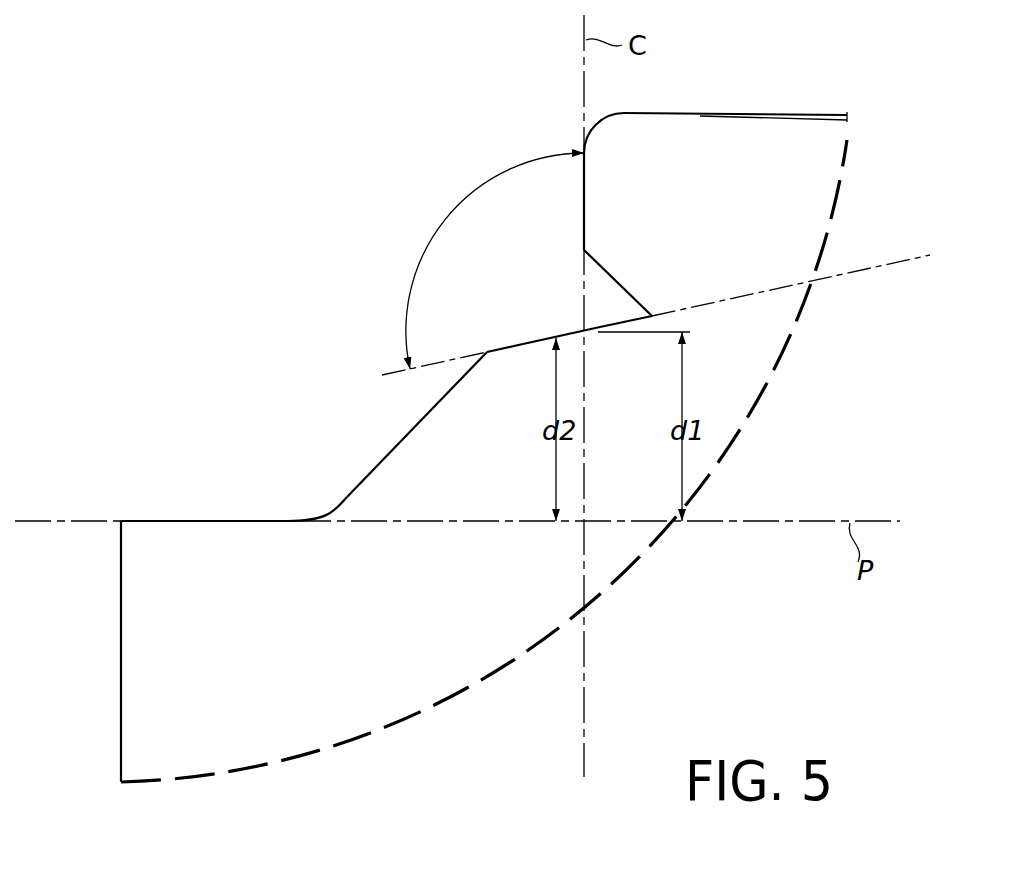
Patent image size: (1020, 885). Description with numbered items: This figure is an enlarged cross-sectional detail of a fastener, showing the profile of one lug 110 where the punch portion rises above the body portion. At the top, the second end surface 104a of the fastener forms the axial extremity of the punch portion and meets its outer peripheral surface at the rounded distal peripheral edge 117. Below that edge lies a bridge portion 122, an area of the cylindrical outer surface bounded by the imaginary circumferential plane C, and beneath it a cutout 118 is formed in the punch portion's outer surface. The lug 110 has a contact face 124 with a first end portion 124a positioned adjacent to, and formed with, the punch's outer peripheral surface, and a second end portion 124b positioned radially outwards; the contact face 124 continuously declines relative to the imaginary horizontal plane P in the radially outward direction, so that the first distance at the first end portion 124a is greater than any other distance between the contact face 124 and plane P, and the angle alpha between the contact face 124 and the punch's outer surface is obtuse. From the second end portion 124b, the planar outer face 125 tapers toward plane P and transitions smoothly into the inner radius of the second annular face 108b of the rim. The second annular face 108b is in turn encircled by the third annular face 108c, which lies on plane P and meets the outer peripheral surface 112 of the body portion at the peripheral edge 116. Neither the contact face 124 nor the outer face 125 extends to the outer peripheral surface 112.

The second end surface 104a is at (781, 115).
The second annular face 108b is at (345, 507).
The third annular face 108c is at (285, 527).
The lug 110 is at (524, 258).
The outer peripheral surface of the body portion 112 is at (121, 655).
The peripheral edge 116 is at (121, 519).
The distal peripheral edge 117 is at (596, 125).
The cutout 118 is at (597, 263).
The bridge portion 122 is at (584, 190).
The contact face 124 is at (523, 343).
The first end portion 124a is at (628, 316).
The second end portion 124b is at (490, 345).
The outer face 125 is at (395, 447).